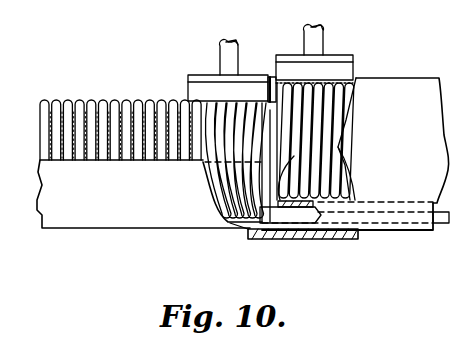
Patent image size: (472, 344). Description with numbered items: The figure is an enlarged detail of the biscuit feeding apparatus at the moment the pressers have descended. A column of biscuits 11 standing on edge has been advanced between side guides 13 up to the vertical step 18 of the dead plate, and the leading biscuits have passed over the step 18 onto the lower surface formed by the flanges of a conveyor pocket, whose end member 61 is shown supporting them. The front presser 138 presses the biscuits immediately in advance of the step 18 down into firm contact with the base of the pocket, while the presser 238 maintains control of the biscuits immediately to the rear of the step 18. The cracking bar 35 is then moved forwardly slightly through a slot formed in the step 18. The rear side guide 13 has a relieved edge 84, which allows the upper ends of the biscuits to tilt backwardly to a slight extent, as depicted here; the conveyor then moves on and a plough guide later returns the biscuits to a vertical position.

The front presser 138 is at (193, 75).
The relieved edge 84 is at (268, 90).
The presser 238 is at (346, 55).
The column of biscuits 11 is at (343, 97).
The side guides 13 is at (414, 86).
The vertical step 18 is at (278, 183).
The end members 61 is at (72, 222).
The cracking bar 35 is at (288, 233).